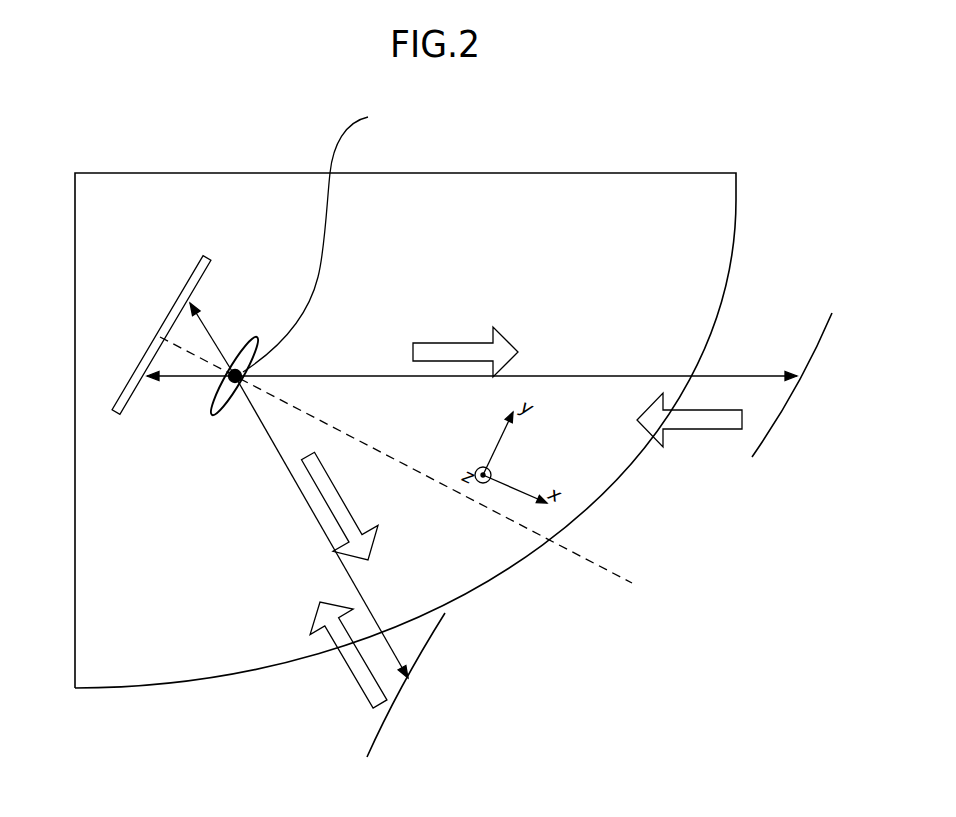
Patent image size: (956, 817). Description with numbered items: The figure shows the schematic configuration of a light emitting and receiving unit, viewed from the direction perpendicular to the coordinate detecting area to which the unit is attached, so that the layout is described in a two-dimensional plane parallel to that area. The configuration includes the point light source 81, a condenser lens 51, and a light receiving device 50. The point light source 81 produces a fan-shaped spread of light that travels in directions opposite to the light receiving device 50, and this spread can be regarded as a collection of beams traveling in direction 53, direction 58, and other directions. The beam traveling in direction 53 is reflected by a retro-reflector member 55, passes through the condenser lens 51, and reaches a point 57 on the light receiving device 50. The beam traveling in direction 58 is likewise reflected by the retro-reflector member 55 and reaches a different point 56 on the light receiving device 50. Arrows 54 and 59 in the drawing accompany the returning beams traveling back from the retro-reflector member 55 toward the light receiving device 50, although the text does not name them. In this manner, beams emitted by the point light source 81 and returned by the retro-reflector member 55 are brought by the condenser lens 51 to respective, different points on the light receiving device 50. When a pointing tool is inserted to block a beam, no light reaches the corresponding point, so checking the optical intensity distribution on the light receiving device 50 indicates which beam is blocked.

The light receiving device 50 is at (206, 256).
The condenser lens 51 is at (257, 337).
The direction of a light beam 53 is at (479, 337).
The light traveling direction (return) 54 is at (689, 431).
The retro-reflector member 55 is at (815, 342).
The point on the light receiving device 56 is at (192, 327).
The point on the light receiving device 57 is at (169, 377).
The direction of a light beam 58 is at (341, 506).
The light traveling direction (upward) 59 is at (348, 655).
The point light source 81 is at (321, 238).